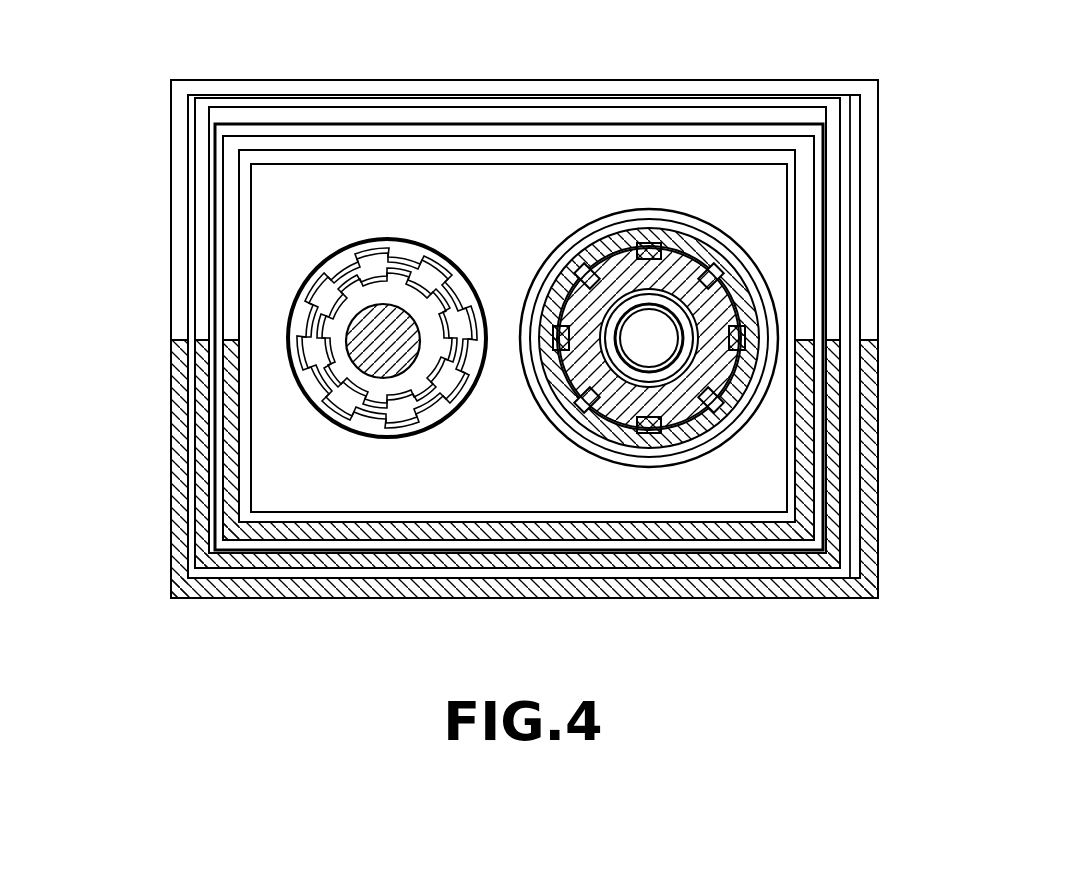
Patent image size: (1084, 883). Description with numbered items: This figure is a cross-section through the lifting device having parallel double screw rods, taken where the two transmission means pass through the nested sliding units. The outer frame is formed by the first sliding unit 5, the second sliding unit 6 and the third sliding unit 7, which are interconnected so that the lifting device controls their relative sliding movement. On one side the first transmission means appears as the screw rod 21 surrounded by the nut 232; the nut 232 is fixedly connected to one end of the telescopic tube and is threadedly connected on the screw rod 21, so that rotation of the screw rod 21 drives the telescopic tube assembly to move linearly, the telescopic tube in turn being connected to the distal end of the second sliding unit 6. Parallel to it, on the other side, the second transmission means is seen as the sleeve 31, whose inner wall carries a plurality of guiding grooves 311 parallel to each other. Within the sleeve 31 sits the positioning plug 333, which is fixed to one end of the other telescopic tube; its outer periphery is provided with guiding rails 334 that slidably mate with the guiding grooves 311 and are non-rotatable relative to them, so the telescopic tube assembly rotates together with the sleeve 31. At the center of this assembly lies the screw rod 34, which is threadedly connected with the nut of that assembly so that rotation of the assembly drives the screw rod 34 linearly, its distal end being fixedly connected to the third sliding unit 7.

The first sliding unit 5 is at (227, 390).
The second sliding unit 6 is at (200, 415).
The third sliding unit 7 is at (177, 488).
The screw rod 21 is at (362, 337).
The nut 232 is at (388, 243).
The sleeve 31 is at (748, 303).
The guiding grooves 311 is at (675, 250).
The positioning plug 333 is at (715, 372).
The guiding rails 334 is at (672, 257).
The screw rod 34 is at (658, 335).